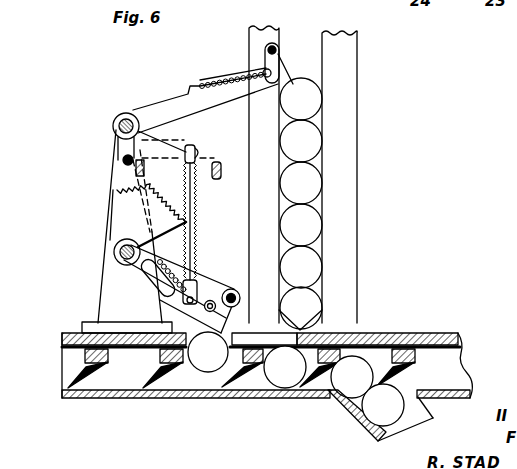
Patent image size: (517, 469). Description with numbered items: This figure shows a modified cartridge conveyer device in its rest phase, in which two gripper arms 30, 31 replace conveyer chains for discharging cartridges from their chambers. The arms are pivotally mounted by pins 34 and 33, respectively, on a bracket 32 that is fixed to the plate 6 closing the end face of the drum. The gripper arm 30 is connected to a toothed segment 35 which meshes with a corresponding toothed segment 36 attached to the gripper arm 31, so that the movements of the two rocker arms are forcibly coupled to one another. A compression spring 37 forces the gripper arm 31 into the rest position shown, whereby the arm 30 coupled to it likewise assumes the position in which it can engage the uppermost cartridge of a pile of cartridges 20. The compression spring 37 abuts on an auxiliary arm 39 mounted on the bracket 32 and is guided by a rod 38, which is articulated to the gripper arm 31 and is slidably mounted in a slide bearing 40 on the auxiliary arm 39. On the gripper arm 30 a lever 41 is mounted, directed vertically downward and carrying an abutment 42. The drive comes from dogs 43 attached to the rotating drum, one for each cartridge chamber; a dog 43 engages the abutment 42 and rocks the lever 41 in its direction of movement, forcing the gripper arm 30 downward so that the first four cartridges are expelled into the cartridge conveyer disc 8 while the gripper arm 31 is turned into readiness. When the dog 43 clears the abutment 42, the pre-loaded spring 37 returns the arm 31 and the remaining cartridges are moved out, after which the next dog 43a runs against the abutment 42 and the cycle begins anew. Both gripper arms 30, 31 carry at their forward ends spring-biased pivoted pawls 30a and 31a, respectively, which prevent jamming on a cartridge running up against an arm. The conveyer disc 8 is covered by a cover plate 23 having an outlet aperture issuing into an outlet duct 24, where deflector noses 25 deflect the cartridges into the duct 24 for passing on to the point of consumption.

The plate 6 is at (62, 335).
The cartridge conveyer disc 8 is at (62, 364).
The pile of cartridges 20 is at (301, 183).
The cover plate 23 is at (122, 400).
The outlet duct 24 is at (360, 418).
The deflector noses 25 is at (425, 378).
The gripper arm 30 is at (163, 100).
The spring-biased pivoted pawl 30a is at (289, 58).
The gripper arm 31 is at (146, 284).
The spring-biased pivoted pawl 31a is at (242, 316).
The bracket 32 is at (102, 274).
The pin 33 is at (113, 251).
The pin 34 is at (123, 113).
The toothed segment 35 is at (112, 184).
The toothed segment 36 is at (113, 208).
The compression spring 37 is at (194, 238).
The rod 38 is at (196, 258).
The auxiliary arm 39 is at (193, 146).
The slide bearing 40 is at (198, 156).
The lever 41 is at (113, 142).
The abutment 42 is at (122, 158).
The dog 43 is at (133, 170).
The next dog 43a is at (217, 181).